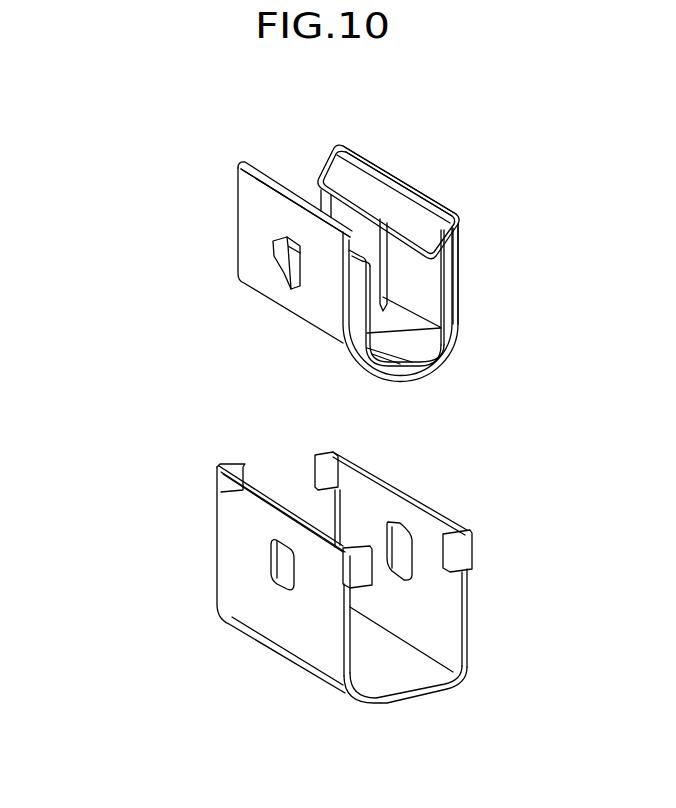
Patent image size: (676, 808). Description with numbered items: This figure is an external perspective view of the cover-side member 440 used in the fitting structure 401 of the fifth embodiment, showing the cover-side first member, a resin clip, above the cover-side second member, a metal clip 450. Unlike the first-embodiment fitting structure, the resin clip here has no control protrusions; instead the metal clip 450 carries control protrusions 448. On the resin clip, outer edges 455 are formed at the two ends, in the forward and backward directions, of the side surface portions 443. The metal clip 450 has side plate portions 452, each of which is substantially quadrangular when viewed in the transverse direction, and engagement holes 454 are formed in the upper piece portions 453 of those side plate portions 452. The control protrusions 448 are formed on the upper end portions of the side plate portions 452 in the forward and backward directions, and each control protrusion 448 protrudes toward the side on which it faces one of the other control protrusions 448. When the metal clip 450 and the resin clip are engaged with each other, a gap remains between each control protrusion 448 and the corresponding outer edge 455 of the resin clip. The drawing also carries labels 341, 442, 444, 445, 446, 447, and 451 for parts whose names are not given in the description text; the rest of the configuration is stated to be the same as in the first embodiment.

The terminal 341 is at (288, 137).
The cover-side member 440 is at (295, 260).
The fitting structure 401 is at (351, 260).
The bottom portion 442 is at (400, 382).
The side surface portions 443 is at (290, 300).
The pressing plate portion 444 is at (389, 192).
The tongue portion 445 is at (387, 273).
The engagement tab 446 is at (262, 254).
The tab tip 447 is at (282, 272).
The control protrusions 448 is at (463, 530).
The metal clip 450 is at (319, 563).
The holder bottom wall 451 is at (405, 699).
The side plate portions 452 is at (273, 618).
The upper piece portions 453 is at (419, 512).
The engagement holes 454 is at (287, 567).
The outer edges 455 is at (318, 182).